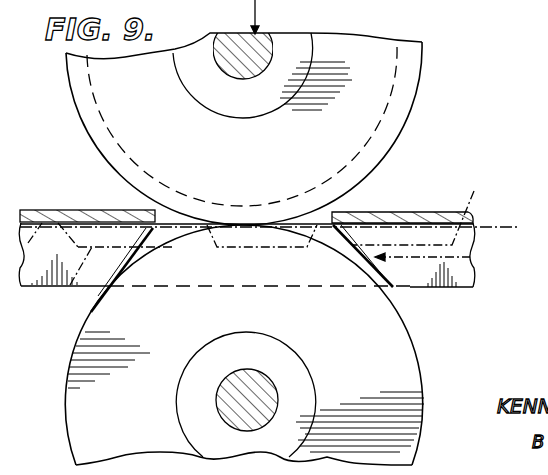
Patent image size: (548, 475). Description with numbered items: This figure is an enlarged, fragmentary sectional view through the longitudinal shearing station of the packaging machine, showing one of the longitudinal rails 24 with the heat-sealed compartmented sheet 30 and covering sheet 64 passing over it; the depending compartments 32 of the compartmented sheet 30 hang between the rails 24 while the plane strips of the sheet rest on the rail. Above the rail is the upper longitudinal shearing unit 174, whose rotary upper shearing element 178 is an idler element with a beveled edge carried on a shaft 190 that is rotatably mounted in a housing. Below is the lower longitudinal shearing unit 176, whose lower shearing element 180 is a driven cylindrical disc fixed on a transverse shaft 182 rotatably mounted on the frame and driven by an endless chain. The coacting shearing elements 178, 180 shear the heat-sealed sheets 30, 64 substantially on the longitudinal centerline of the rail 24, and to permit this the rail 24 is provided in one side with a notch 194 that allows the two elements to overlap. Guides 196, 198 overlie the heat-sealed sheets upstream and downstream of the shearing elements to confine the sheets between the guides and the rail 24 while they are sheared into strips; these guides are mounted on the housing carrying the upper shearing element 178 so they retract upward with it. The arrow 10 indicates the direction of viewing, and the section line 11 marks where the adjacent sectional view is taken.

The web feed direction 10 is at (272, 17).
The section line 11 is at (242, 187).
The longitudinal rail 24 is at (457, 271).
The compartmented sheet 30 is at (283, 234).
The compartment 32 is at (70, 287).
The covering sheet 64 is at (429, 214).
The upper longitudinal shearing unit 174 is at (387, 24).
The lower longitudinal shearing unit 176 is at (432, 367).
The upper shearing element 178 is at (371, 95).
The lower shearing element 180 is at (384, 333).
The transverse shaft 182 is at (240, 396).
The shaft 190 is at (254, 56).
The notch 194 is at (376, 279).
The guide 196 is at (374, 213).
The guide 198 is at (83, 212).